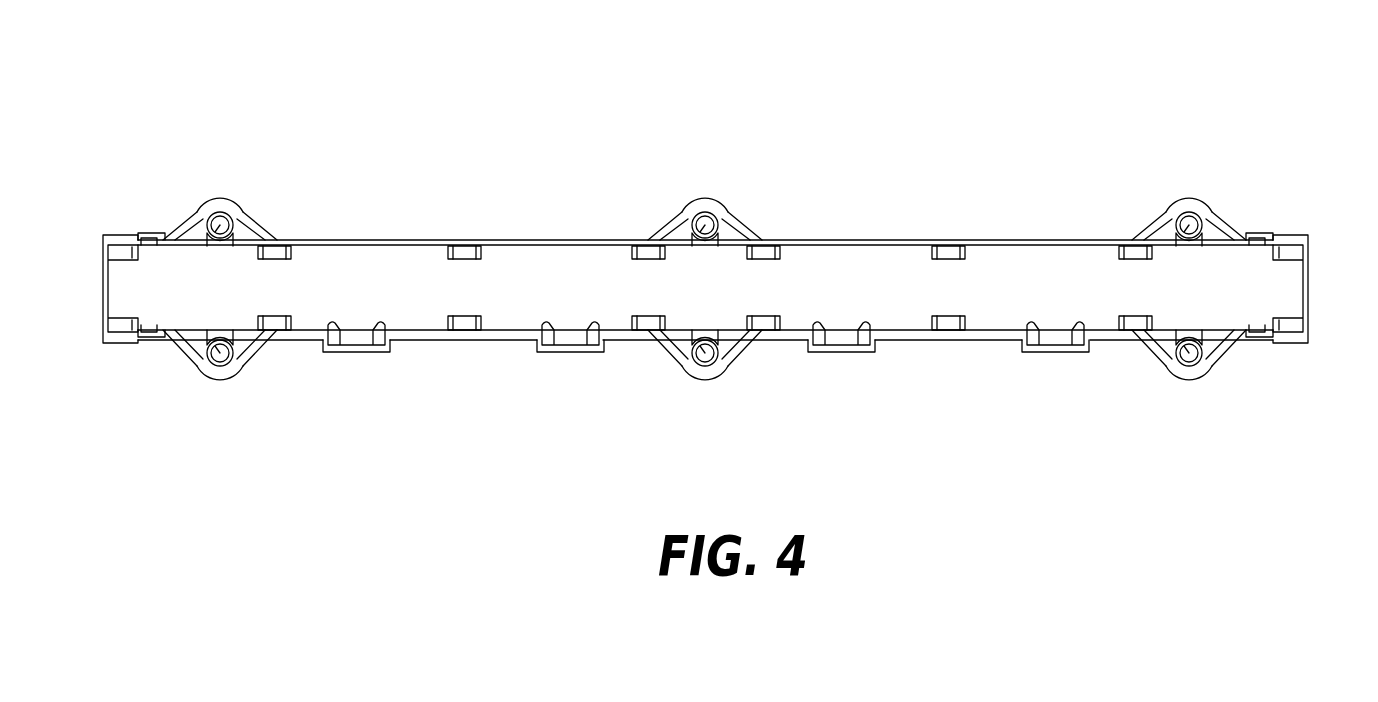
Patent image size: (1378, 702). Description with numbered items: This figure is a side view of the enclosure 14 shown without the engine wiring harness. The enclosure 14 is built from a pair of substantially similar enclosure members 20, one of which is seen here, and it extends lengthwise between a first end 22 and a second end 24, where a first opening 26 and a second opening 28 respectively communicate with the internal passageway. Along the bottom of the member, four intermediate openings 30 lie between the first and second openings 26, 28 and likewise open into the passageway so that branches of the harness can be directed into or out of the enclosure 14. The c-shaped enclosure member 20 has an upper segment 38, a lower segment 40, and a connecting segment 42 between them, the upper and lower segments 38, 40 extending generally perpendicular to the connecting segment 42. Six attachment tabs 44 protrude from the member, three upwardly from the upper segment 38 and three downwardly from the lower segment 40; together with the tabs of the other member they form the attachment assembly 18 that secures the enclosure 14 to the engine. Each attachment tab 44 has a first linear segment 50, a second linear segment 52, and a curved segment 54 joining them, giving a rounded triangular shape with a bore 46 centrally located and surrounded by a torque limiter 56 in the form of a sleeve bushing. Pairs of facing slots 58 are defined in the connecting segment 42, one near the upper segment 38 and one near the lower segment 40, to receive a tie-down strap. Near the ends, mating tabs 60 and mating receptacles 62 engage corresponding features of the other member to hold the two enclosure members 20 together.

The enclosure 14 is at (1010, 108).
The attachment assembly 18 is at (838, 188).
The enclosure member 20 is at (574, 160).
The first end 22 is at (102, 228).
The second end 24 is at (1308, 228).
The first opening 26 is at (103, 292).
The second opening 28 is at (1310, 272).
The intermediate opening 30 is at (375, 353).
The upper segment 38 is at (381, 240).
The lower segment 40 is at (410, 340).
The connecting segment 42 is at (407, 293).
The attachment tab 44 is at (297, 183).
The bore 46 is at (215, 222).
The first linear segment 50 is at (190, 222).
The second linear segment 52 is at (268, 240).
The curved segment 54 is at (218, 207).
The torque limiter 56 is at (237, 217).
The slot 58 is at (280, 268).
The mating tab 60 is at (700, 271).
The mating receptacle 62 is at (147, 230).